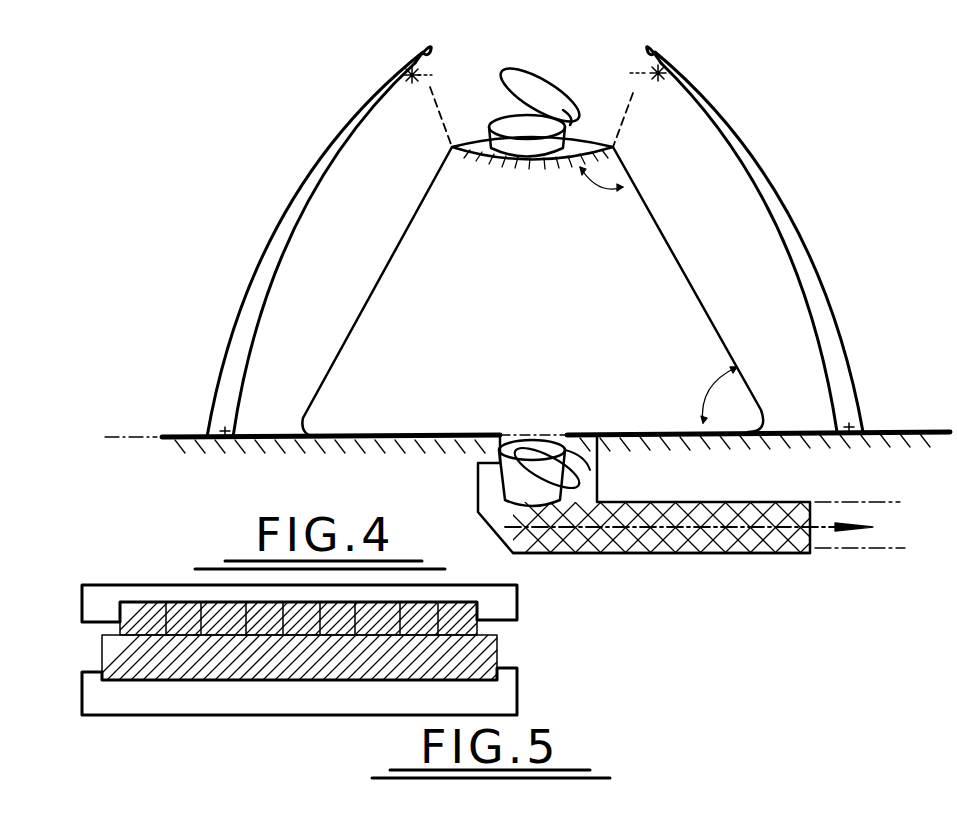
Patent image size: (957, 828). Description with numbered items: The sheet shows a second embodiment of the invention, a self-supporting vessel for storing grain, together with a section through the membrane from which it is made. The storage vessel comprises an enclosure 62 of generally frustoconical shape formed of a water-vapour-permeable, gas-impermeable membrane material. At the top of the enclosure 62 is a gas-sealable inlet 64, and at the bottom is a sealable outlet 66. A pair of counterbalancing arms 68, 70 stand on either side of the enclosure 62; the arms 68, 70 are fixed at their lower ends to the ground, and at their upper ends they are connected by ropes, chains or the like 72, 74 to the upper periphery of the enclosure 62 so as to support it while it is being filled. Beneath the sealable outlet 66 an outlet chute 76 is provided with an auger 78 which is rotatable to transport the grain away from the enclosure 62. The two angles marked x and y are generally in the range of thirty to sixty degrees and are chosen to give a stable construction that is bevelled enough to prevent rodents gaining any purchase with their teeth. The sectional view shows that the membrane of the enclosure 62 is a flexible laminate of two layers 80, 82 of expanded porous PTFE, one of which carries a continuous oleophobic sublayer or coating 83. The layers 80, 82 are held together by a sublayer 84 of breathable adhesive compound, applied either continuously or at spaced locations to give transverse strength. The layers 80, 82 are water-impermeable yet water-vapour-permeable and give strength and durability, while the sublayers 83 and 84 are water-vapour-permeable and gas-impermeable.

In FIG. 4, the enclosure 62 is at (627, 257).
In FIG. 4, the gas-sealable inlet 64 is at (548, 102).
In FIG. 4, the sealable outlet 66 is at (476, 463).
In FIG. 4, the counterbalancing arm 68 is at (303, 192).
In FIG. 4, the counterbalancing arm 70 is at (767, 185).
In FIG. 4, the rope or chain 72 is at (430, 82).
In FIG. 4, the rope or chain 74 is at (633, 90).
In FIG. 4, the outlet chute 76 is at (752, 502).
In FIG. 4, the auger 78 is at (718, 550).
In FIG. 5, the layer of expanded porous PTFE 80 is at (518, 598).
In FIG. 5, the layer of expanded porous PTFE 82 is at (518, 690).
In FIG. 5, the oleophobic sublayer 83 is at (498, 655).
In FIG. 5, the adhesive sublayer 84 is at (482, 624).